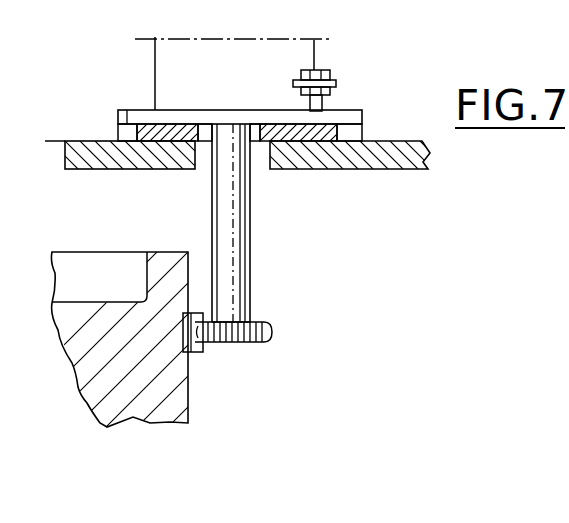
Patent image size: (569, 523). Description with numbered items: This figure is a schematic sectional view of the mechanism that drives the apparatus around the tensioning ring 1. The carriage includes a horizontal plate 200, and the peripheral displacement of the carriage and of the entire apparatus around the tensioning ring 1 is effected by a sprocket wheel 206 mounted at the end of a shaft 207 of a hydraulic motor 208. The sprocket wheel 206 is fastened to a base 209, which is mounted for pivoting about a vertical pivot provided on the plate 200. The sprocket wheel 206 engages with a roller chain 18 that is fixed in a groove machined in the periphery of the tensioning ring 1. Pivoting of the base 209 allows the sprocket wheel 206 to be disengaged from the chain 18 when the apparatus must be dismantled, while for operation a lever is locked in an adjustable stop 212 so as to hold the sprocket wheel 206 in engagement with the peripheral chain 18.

The tensioning ring 1 is at (103, 373).
The roller chain 18 is at (198, 352).
The horizontal plate 200 is at (375, 171).
The sprocket wheel 206 is at (272, 332).
The shaft 207 is at (238, 257).
The hydraulic motor 208 is at (302, 57).
The base 209 is at (126, 110).
The adjustable stop 212 is at (337, 82).